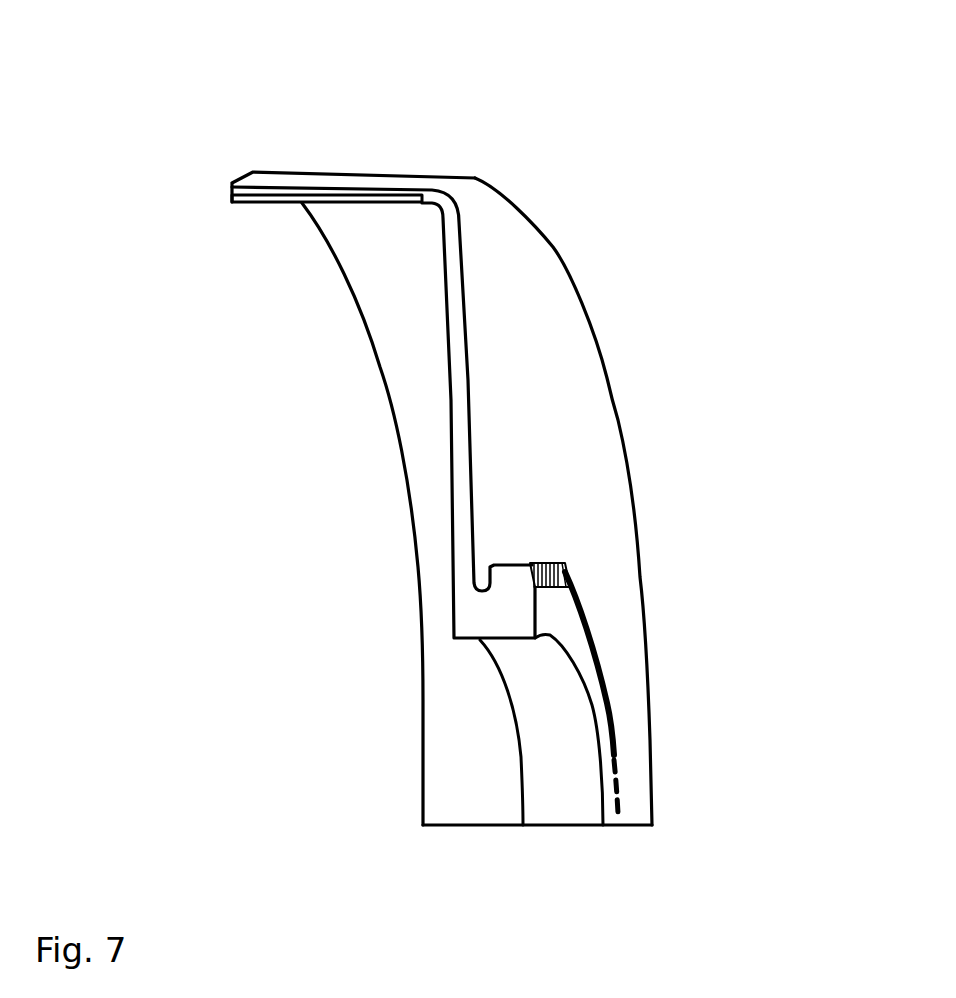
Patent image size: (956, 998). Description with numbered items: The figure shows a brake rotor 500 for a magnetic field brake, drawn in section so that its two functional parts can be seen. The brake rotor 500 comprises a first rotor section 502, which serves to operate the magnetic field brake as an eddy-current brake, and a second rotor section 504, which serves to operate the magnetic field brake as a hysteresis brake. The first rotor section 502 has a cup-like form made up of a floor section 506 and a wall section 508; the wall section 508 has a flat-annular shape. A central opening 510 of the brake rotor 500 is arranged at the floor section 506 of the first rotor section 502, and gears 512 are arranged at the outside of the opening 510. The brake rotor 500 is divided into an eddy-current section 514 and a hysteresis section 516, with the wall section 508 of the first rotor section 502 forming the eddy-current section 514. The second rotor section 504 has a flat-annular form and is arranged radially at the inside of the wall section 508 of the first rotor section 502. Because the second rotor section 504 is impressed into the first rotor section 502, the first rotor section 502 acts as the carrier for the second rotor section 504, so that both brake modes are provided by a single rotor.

The brake rotor 500 is at (518, 183).
The first rotor section 502 is at (560, 360).
The second rotor section 504 is at (243, 210).
The floor section 506 is at (600, 467).
The wall section 508 is at (310, 166).
The central opening 510 is at (573, 753).
The gears 512 is at (556, 566).
The eddy-current section 514 is at (310, 166).
The hysteresis section 516 is at (243, 210).